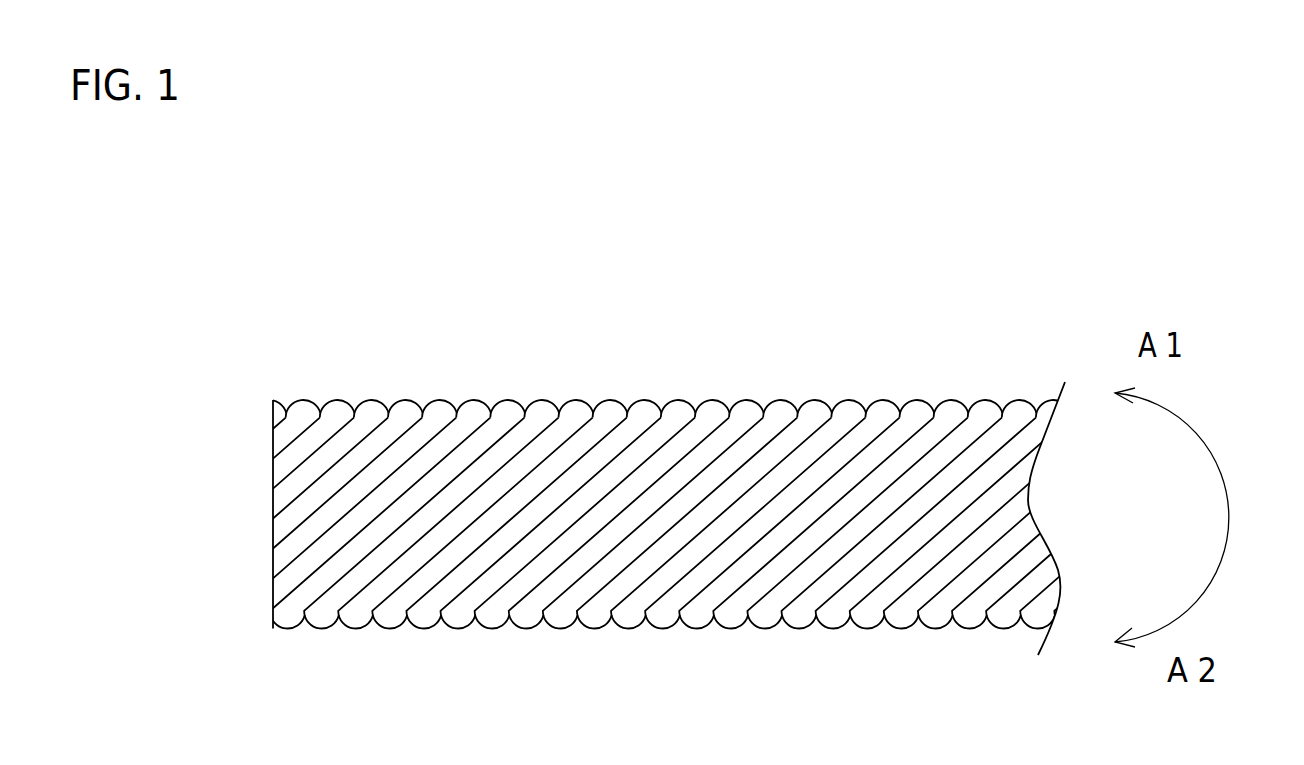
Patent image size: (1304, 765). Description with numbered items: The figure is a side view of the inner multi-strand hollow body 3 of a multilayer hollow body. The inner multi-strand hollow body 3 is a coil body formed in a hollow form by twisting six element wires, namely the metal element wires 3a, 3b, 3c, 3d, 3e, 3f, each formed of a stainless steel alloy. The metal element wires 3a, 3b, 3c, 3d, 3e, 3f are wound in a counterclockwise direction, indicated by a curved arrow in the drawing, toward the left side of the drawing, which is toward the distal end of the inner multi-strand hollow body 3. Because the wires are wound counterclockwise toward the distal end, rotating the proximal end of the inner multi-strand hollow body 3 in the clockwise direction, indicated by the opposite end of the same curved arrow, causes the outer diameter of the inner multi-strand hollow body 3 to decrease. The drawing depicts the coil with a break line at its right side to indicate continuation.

The inner multi-strand hollow body 3 is at (667, 444).
The metal element wire 3a is at (473, 418).
The metal element wire 3b is at (518, 420).
The metal element wire 3c is at (545, 418).
The metal element wire 3d is at (572, 418).
The metal element wire 3e is at (612, 420).
The metal element wire 3f is at (647, 418).